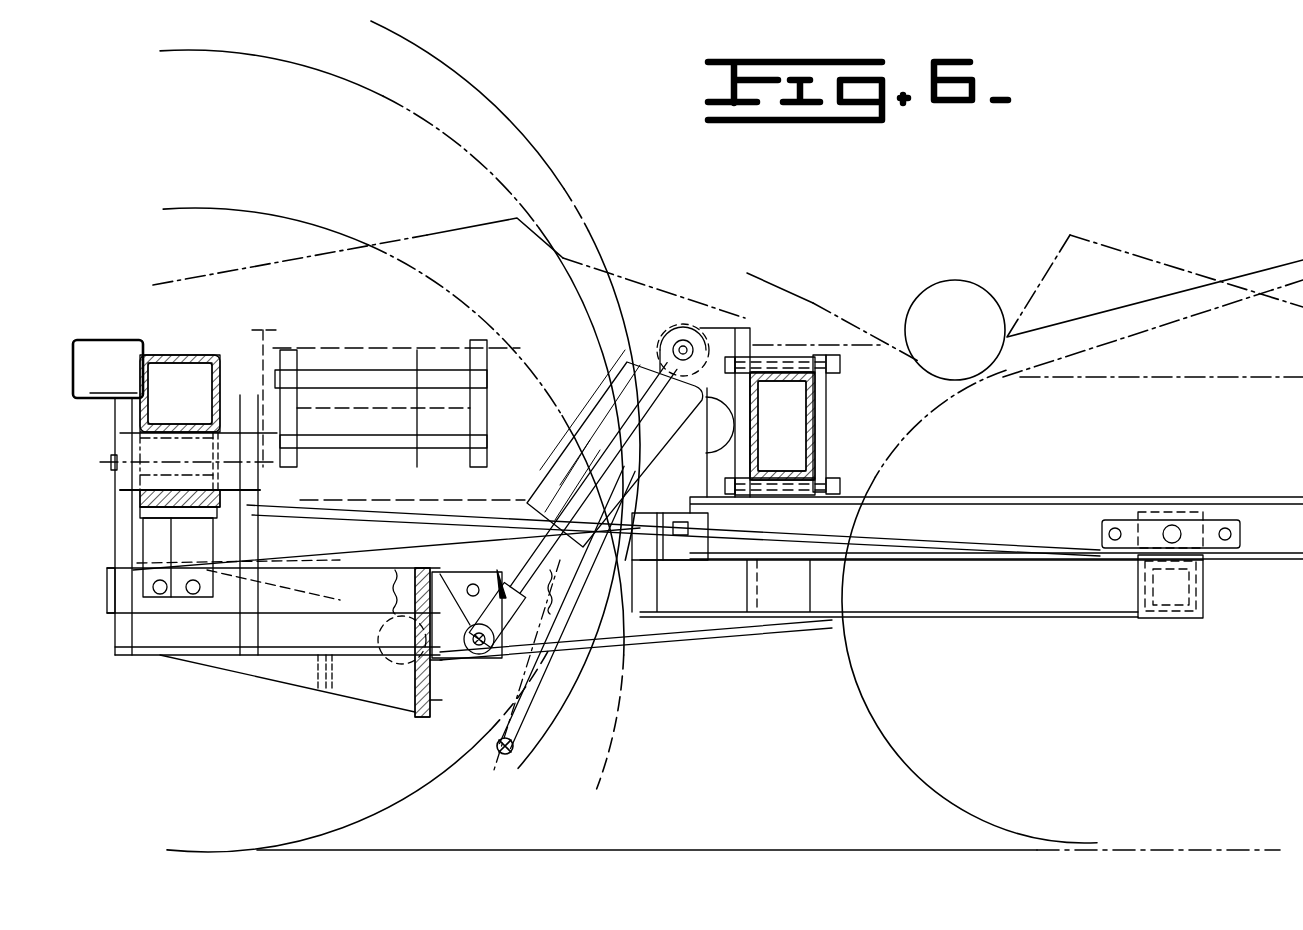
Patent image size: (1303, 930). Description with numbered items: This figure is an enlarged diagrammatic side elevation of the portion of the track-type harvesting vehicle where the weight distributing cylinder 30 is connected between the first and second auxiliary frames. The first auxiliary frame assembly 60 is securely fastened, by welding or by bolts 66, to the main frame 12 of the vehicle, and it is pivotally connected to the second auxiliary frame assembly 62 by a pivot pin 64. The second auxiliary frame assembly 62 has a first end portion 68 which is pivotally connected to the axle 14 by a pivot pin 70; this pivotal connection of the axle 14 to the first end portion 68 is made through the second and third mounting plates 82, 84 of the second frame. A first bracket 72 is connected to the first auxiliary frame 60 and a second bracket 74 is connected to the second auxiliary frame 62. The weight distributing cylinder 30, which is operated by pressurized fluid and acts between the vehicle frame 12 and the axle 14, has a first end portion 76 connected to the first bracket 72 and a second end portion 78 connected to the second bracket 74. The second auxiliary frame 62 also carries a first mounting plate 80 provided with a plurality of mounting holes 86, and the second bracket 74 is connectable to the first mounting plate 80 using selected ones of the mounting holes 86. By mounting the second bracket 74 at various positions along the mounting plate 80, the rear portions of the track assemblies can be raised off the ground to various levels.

The main frame 12 is at (826, 396).
The axle 14 is at (180, 355).
The weight distributing cylinder 30 is at (603, 395).
The first auxiliary frame assembly 60 is at (965, 495).
The second auxiliary frame assembly 62 is at (830, 618).
The pivot pin 64 is at (1185, 520).
The bolts 66 is at (790, 358).
The first end portion 68 is at (112, 541).
The pivot pin 70 is at (228, 478).
The first bracket 72 is at (735, 330).
The second bracket 74 is at (458, 658).
The first end portion 76 is at (706, 452).
The second end portion 78 is at (500, 578).
The first mounting plate 80 is at (410, 700).
The second mounting plate 82 is at (240, 635).
The third mounting plate 84 is at (120, 640).
The mounting holes 86 is at (398, 668).